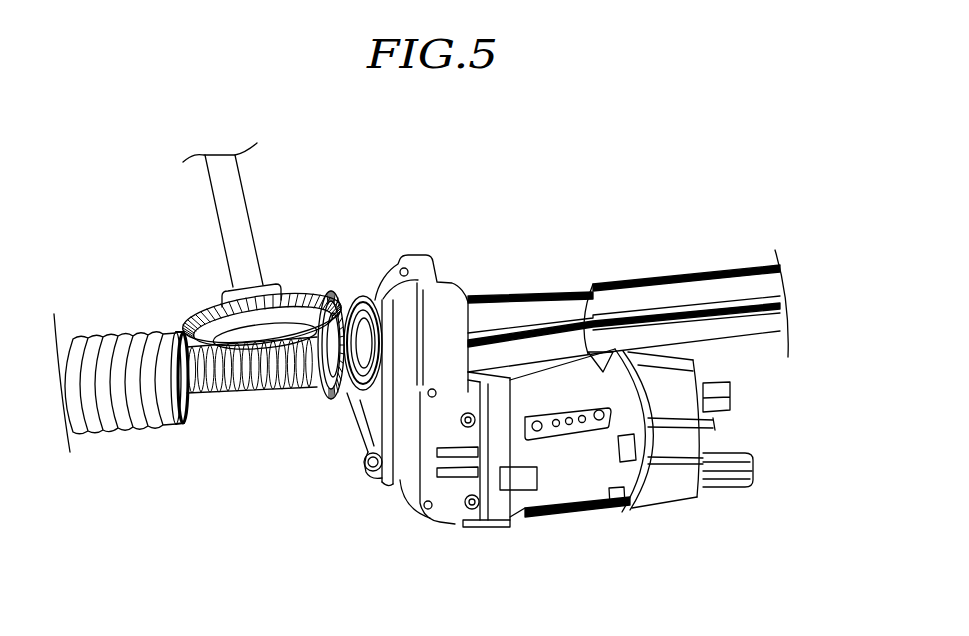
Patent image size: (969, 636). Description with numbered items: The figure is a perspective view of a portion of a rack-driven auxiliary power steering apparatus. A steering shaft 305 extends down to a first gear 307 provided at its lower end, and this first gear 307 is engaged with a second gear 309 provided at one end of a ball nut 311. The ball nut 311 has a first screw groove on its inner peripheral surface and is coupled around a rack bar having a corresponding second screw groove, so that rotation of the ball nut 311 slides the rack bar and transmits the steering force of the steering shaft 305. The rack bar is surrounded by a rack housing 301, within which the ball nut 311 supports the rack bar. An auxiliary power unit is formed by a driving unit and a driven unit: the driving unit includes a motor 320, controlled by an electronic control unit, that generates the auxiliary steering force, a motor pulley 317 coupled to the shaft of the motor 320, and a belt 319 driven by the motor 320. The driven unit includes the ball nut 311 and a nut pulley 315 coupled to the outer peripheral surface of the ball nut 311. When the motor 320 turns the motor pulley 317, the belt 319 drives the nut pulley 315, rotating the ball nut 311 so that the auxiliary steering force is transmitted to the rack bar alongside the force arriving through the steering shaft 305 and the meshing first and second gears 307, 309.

The rack housing 301 is at (532, 315).
The steering shaft 305 is at (233, 190).
The first gear 307 is at (178, 333).
The second gear 309 is at (320, 393).
The ball nut 311 is at (344, 312).
The nut pulley 315 is at (352, 397).
The motor pulley 317 is at (365, 477).
The belt 319 is at (393, 468).
The motor 320 is at (563, 490).